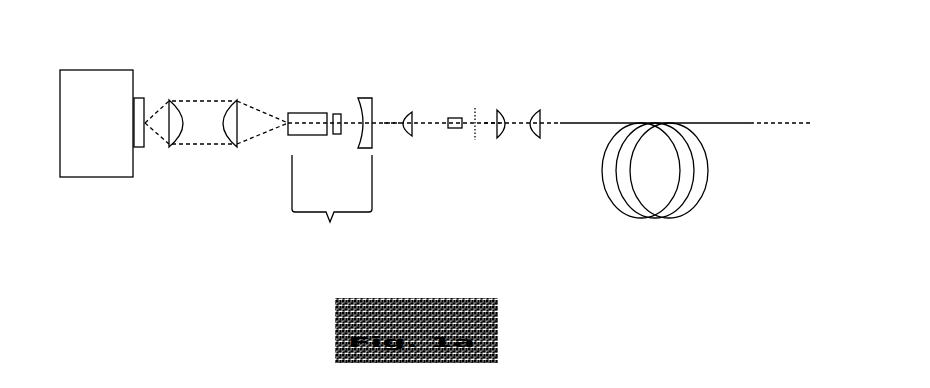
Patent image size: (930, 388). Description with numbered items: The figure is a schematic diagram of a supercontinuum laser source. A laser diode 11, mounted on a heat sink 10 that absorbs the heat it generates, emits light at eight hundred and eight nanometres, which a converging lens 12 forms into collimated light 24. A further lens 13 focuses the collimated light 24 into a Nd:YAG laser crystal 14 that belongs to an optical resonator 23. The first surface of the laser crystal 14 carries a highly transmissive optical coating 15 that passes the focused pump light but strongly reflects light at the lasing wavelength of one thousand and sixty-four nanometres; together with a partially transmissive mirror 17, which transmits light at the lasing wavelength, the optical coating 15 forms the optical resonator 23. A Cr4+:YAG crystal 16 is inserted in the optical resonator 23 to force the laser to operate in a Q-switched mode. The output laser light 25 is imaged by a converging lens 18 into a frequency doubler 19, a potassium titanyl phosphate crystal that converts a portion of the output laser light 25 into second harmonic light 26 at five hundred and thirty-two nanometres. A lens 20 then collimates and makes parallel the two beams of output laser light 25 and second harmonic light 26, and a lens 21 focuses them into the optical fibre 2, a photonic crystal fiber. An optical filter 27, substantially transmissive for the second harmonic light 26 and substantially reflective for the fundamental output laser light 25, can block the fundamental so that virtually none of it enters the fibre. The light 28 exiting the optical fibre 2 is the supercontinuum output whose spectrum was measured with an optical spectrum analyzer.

The optical fibre 2 is at (655, 158).
The heat sink 10 is at (96, 123).
The laser diode 11 is at (144, 92).
The lens 12 is at (164, 131).
The further lens 13 is at (234, 131).
The laser crystal 14 is at (307, 131).
The optical coating 15 is at (287, 117).
The Cr4+:YAG crystal 16 is at (337, 137).
The partially transmissive mirror 17 is at (364, 114).
The lens 18 is at (409, 135).
The frequency doubler 19 is at (454, 134).
The lens 20 is at (502, 134).
The lens 21 is at (536, 133).
The optical resonator 23 is at (332, 200).
The collimated light 24 is at (213, 93).
The output laser light 25 is at (392, 119).
The second harmonic light 26 is at (492, 116).
The optical filter 27 is at (475, 144).
The light exiting the optical fibre 28 is at (787, 120).